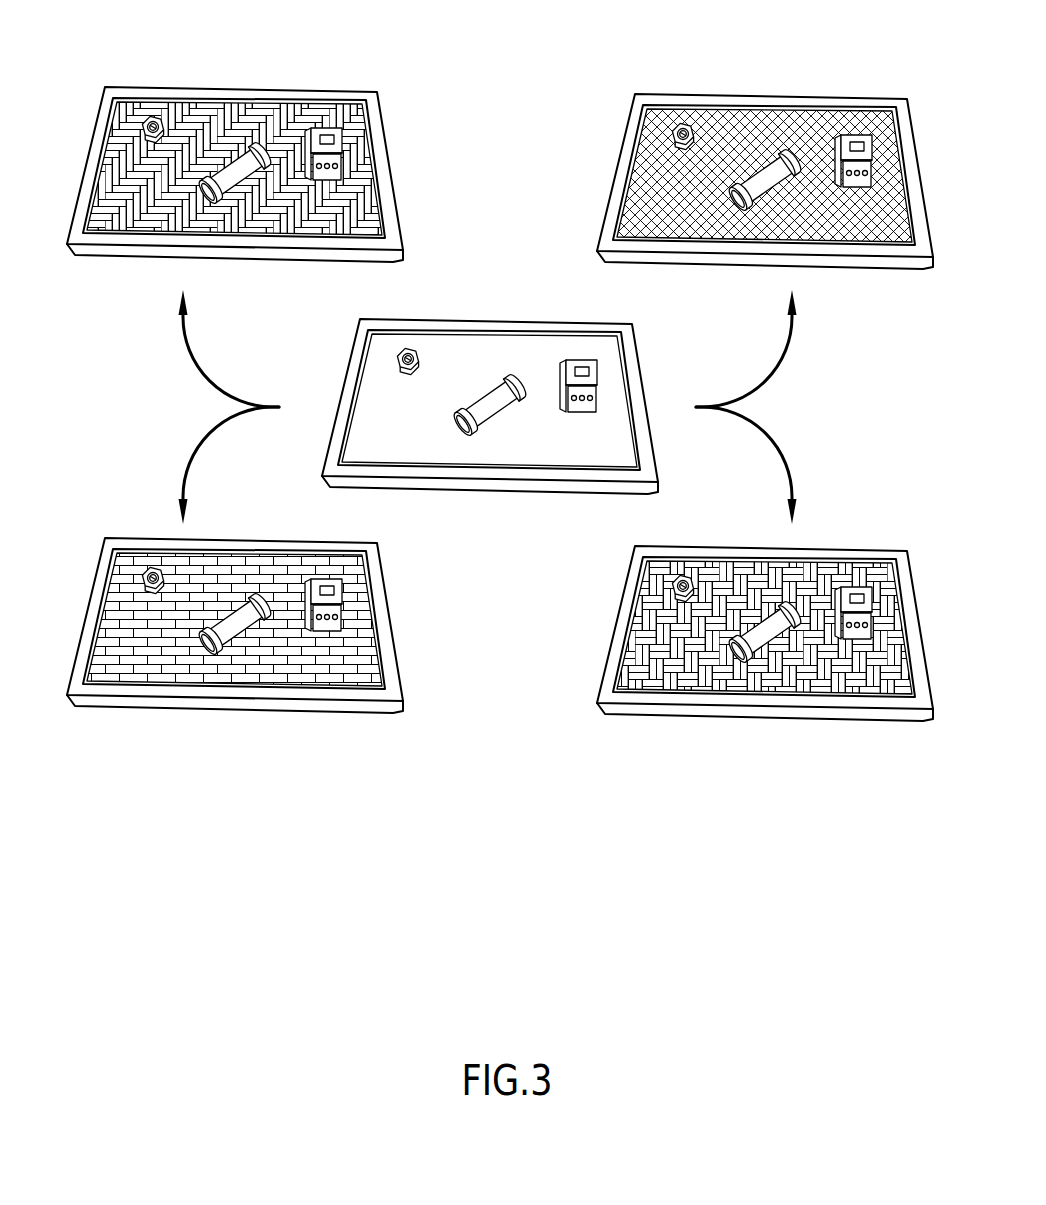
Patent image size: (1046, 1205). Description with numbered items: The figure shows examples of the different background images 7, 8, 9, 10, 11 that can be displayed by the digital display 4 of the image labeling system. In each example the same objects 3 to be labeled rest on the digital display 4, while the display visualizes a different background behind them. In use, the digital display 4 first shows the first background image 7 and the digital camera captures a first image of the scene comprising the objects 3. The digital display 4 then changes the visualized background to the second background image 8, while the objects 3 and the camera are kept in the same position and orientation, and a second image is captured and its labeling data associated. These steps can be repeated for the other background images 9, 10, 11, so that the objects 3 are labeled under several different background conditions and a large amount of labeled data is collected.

The object 3 is at (403, 372).
The digital display 4 is at (186, 80).
The first background image 7 is at (493, 360).
The second background image 8 is at (340, 217).
The background image 9 is at (290, 656).
The background image 10 is at (740, 140).
The background image 11 is at (797, 587).